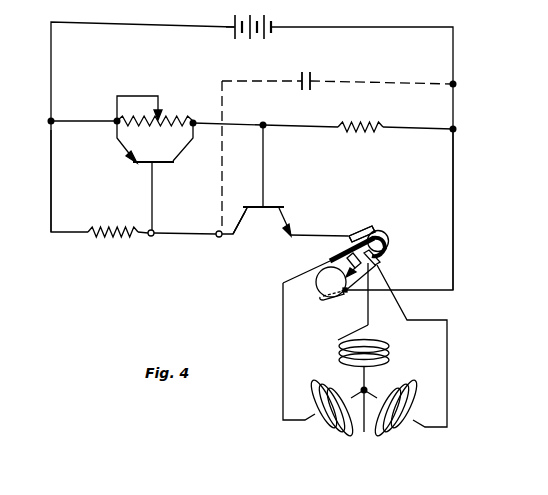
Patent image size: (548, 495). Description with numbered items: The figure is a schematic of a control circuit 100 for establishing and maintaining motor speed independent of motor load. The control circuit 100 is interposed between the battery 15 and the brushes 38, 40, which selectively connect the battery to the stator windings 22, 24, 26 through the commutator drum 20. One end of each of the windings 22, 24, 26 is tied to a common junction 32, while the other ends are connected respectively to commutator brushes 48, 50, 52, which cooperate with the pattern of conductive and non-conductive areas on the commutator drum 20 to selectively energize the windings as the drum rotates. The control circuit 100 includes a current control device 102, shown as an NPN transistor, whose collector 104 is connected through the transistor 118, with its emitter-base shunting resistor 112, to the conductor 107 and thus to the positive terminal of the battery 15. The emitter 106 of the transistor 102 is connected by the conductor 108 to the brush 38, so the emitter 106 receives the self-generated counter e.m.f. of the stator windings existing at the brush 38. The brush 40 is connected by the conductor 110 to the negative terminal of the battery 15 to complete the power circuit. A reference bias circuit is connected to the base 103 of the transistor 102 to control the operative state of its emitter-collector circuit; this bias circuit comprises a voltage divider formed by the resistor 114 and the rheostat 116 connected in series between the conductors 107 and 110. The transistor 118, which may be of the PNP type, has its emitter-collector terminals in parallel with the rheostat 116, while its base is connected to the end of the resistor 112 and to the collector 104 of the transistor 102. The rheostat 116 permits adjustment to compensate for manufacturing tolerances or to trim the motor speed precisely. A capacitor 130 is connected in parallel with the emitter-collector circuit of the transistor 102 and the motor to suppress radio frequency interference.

The battery 15 is at (274, 28).
The capacitor 130 is at (311, 79).
The resistor 114 is at (370, 125).
The rheostat 116 is at (173, 124).
The transistor 118 is at (165, 166).
The conductor 107 is at (52, 188).
The emitter-base shunting resistor 112 is at (124, 227).
The control circuit 100 is at (195, 246).
The base 103 is at (265, 173).
The current control device 102 is at (270, 205).
The collector 104 is at (244, 219).
The emitter 106 is at (288, 230).
The conductor 108 is at (328, 232).
The brush 38 is at (360, 234).
The commutator drum 20 is at (389, 236).
The commutator brush 50 is at (330, 256).
The commutator brush 48 is at (381, 263).
The brush 40 is at (343, 295).
The commutator brush 52 is at (375, 287).
The conductor 110 is at (453, 240).
The stator winding 26 is at (391, 362).
The stator winding 24 is at (346, 430).
The stator winding 22 is at (388, 430).
The common junction 32 is at (366, 422).